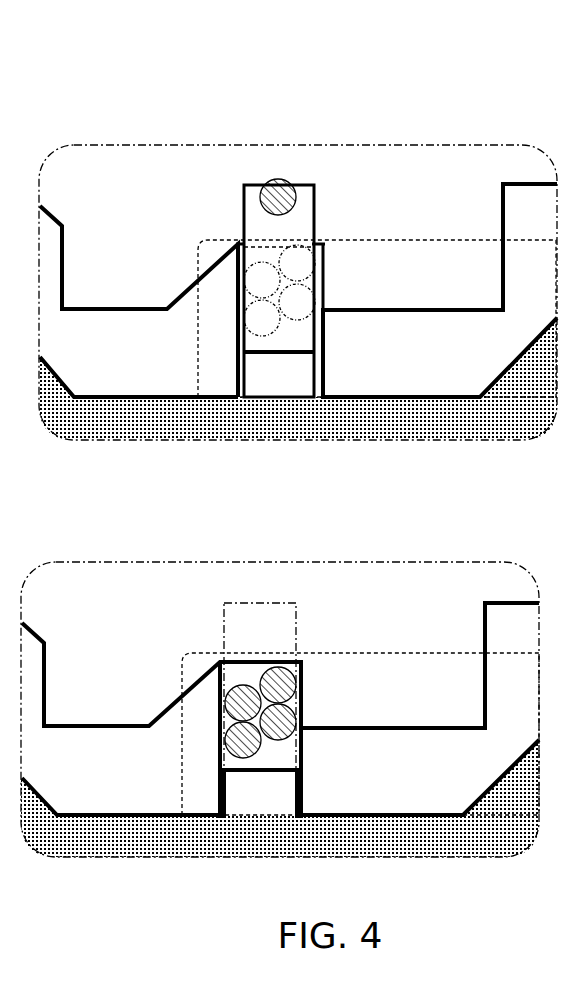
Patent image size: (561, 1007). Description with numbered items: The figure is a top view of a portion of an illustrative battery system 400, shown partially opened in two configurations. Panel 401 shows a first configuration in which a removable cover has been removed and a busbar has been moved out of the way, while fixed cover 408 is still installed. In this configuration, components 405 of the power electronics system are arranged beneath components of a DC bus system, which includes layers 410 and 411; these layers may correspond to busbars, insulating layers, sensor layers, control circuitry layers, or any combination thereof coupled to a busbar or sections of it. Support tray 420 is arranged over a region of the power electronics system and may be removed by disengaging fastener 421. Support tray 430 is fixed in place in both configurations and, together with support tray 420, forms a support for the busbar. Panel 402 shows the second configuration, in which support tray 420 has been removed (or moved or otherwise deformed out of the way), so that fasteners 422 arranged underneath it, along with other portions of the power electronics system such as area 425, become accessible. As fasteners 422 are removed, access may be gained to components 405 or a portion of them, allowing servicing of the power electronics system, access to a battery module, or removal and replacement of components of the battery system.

The battery system 400 is at (148, 194).
The panel 401 is at (158, 145).
The panel 402 is at (112, 562).
The components 405 is at (452, 238).
The fixed cover 408 is at (443, 424).
The layer 410 is at (130, 301).
The layer 411 is at (130, 389).
The support tray 420 is at (318, 212).
The fastener 421 is at (287, 183).
The fasteners 422 is at (228, 738).
The area 425 is at (297, 603).
The support tray 430 is at (296, 384).